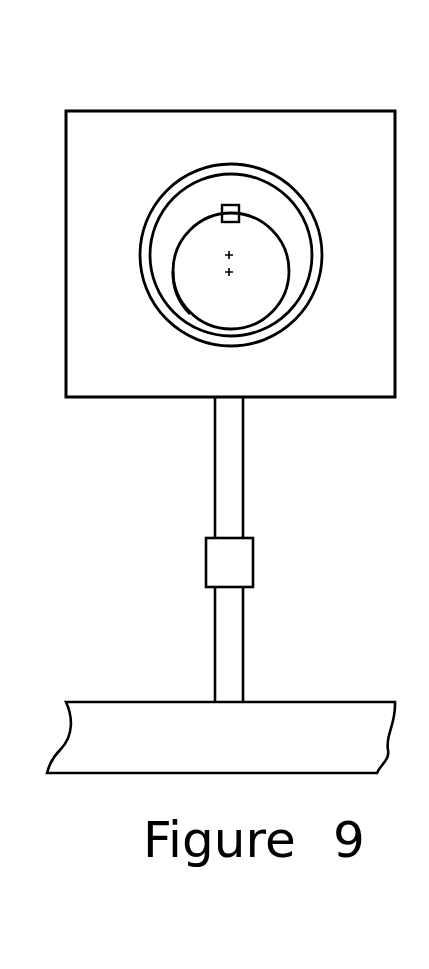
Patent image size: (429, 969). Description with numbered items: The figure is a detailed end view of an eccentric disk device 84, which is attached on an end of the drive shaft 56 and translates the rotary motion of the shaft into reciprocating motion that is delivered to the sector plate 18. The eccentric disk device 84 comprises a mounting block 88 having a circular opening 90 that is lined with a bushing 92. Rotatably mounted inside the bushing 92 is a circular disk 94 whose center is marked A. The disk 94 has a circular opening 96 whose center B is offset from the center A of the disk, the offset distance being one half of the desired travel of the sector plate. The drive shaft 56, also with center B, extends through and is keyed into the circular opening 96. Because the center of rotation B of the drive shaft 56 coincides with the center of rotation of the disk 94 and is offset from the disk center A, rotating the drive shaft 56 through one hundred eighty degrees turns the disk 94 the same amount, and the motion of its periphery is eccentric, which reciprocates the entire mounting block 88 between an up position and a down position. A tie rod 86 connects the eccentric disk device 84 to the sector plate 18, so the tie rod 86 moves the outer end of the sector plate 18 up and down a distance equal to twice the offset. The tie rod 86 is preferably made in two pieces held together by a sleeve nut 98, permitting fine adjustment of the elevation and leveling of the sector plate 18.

The eccentric disk device 84 is at (234, 97).
The mounting block 88 is at (287, 390).
The circular opening 90 is at (273, 172).
The bushing 92 is at (300, 208).
The circular disk 94 is at (287, 292).
The circular opening 96 is at (179, 298).
The drive shaft 56 is at (230, 295).
The center of the disk A is at (229, 255).
The center of the opening B is at (229, 272).
The tie rod 86 is at (232, 648).
The sleeve nut 98 is at (253, 562).
The sector plate 18 is at (292, 702).